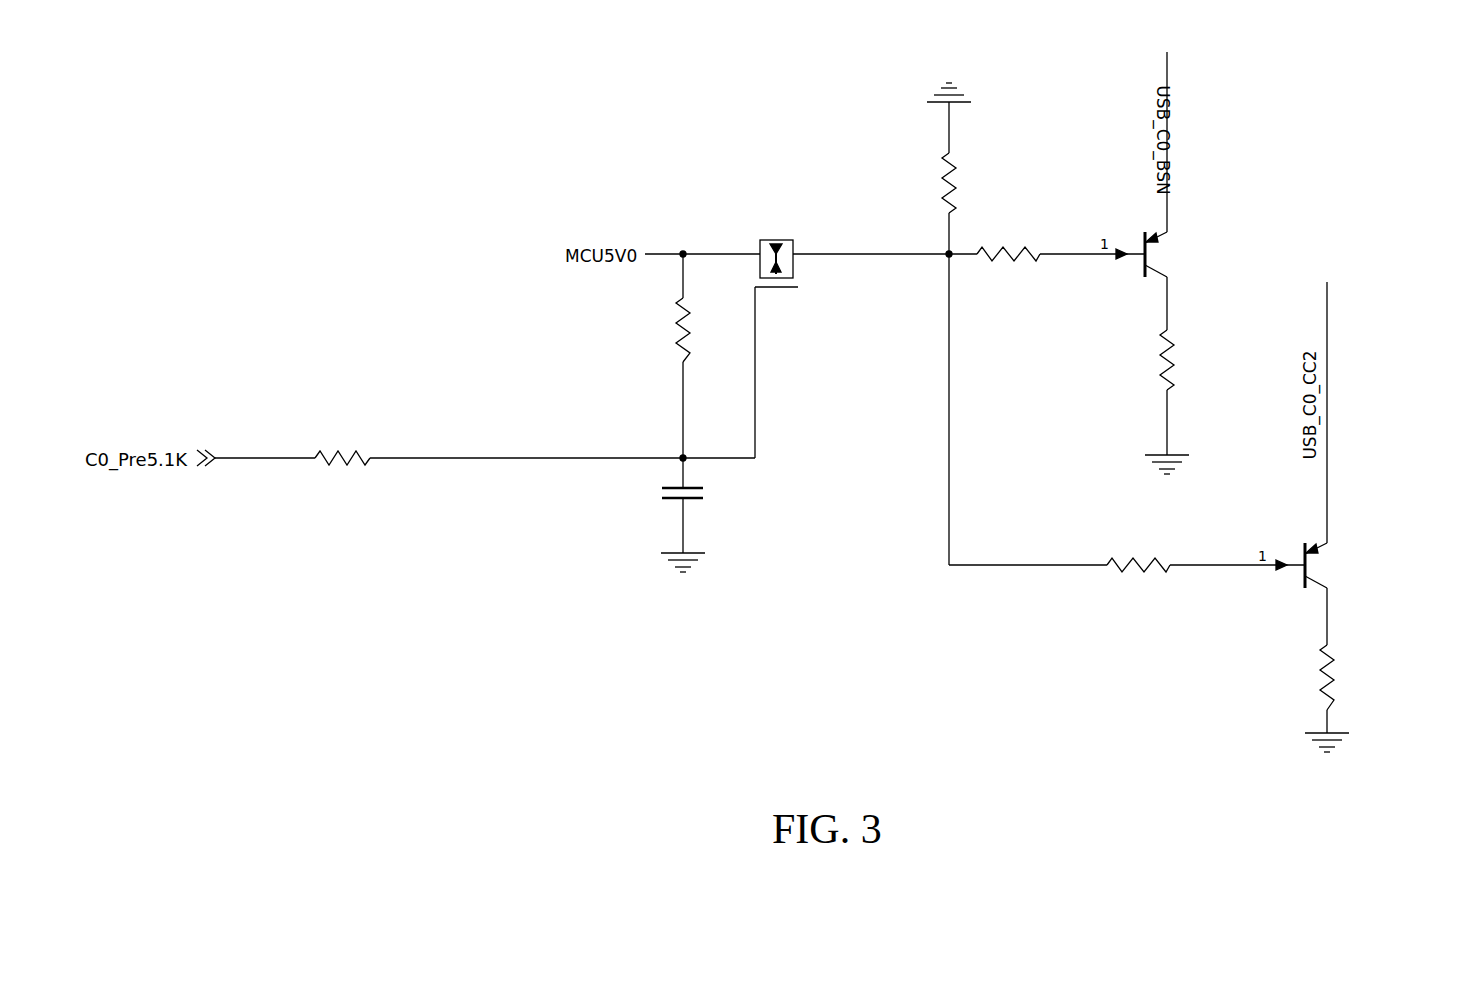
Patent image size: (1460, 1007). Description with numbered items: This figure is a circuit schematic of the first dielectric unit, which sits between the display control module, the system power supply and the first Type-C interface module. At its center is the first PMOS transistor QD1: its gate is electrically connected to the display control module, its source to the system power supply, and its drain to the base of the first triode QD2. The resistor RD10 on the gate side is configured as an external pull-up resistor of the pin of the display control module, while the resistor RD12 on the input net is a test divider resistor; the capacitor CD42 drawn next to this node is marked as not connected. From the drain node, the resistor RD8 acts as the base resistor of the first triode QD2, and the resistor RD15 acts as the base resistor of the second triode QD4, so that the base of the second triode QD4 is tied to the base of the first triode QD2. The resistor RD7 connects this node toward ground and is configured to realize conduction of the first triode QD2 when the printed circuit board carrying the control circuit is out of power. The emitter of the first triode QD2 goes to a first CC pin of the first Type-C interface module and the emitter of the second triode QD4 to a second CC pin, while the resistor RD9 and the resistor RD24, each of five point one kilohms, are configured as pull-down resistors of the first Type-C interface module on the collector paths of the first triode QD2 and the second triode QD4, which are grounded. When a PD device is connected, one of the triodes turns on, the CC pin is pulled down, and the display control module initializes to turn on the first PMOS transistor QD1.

The resistor RD12 is at (335, 452).
The resistor RD10 is at (642, 329).
The capacitor CD42 (NC) CD42 is at (655, 509).
The first PMOS transistor QD1 is at (778, 255).
The resistor RD7 is at (921, 183).
The resistor RD8 is at (1006, 267).
The first triode QD2 is at (1206, 261).
The resistor RD9 is at (1193, 360).
The resistor RD15 is at (1135, 580).
The second triode QD4 is at (1374, 563).
The resistor RD24 is at (1357, 677).